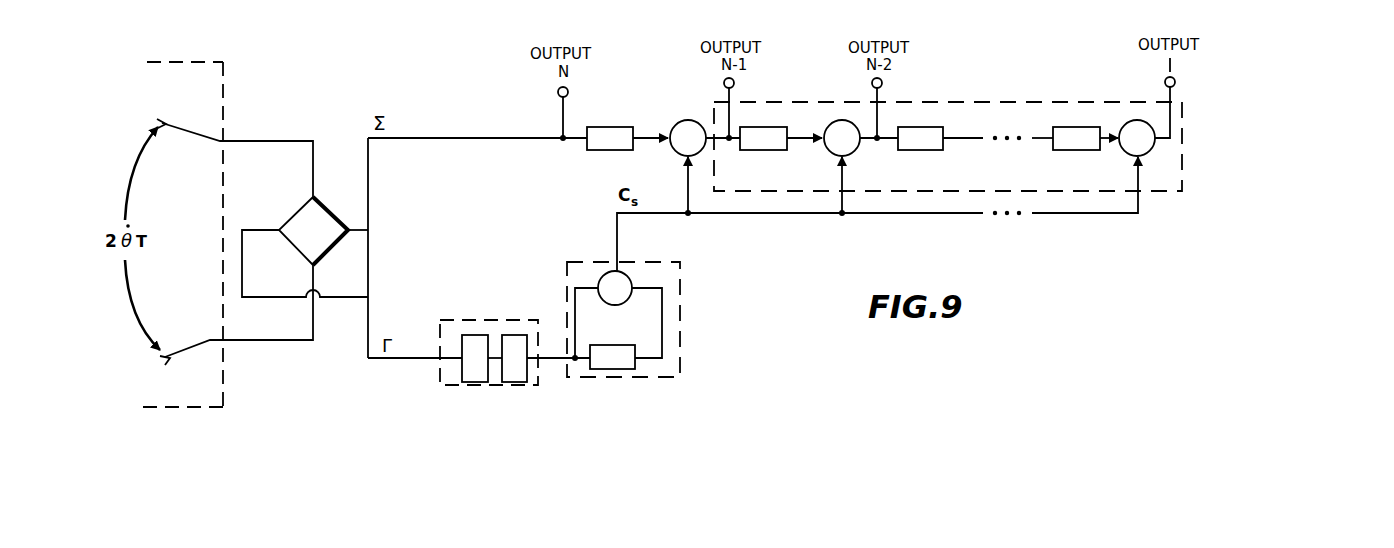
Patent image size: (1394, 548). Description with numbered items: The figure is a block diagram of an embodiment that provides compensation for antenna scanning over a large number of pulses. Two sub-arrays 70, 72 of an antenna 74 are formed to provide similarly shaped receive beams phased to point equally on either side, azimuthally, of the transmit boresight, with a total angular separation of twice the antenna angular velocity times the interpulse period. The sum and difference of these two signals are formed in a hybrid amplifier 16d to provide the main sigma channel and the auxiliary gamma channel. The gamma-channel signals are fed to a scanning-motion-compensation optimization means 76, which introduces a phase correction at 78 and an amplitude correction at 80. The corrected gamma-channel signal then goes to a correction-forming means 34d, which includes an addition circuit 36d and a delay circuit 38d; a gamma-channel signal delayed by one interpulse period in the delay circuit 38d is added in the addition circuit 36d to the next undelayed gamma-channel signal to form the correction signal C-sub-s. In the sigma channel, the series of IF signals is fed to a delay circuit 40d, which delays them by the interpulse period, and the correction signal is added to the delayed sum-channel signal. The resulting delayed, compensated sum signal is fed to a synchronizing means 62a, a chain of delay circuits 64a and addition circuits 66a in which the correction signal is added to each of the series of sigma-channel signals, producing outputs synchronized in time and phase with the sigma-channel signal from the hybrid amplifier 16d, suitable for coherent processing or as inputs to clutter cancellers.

The antenna 74 is at (187, 62).
The sub-array 70 is at (199, 134).
The sub-array 72 is at (205, 343).
The hybrid amplifier 16d is at (302, 204).
The delay circuit 40d is at (608, 152).
The synchronizing means 62a is at (1156, 191).
The delay circuit 64a is at (751, 151).
The addition circuit 66a is at (858, 151).
The scanning-motion-compensation optimization means 76 is at (467, 352).
The phase correction 78 is at (478, 335).
The amplitude correction 80 is at (507, 335).
The correction-forming means 34d is at (648, 324).
The addition circuit 36d is at (630, 272).
The delay circuit 38d is at (615, 370).